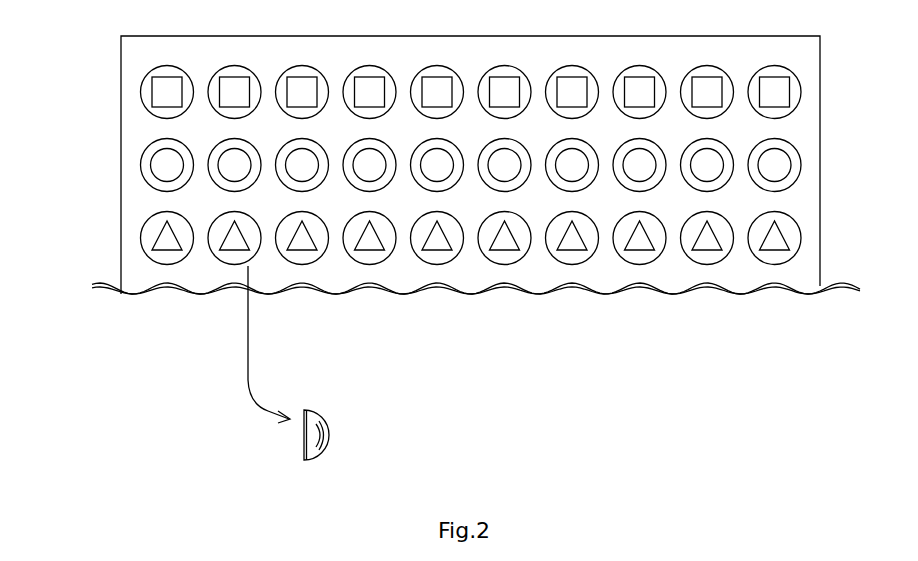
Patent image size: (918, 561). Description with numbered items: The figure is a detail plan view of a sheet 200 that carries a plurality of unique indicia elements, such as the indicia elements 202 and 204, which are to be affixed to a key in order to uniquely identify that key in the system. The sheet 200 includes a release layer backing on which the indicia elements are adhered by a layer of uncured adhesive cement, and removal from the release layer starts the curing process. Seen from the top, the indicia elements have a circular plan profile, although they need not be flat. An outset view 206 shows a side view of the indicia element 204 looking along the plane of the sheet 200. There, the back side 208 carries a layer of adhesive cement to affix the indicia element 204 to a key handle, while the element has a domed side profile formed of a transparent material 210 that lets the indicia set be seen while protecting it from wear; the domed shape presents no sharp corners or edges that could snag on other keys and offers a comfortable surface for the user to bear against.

The sheet 200 is at (444, 219).
The indicia element 202 is at (147, 177).
The indicia element 204 is at (222, 265).
The outset view 206 is at (336, 444).
The back side 208 is at (336, 462).
The light emitting element 210 is at (334, 434).